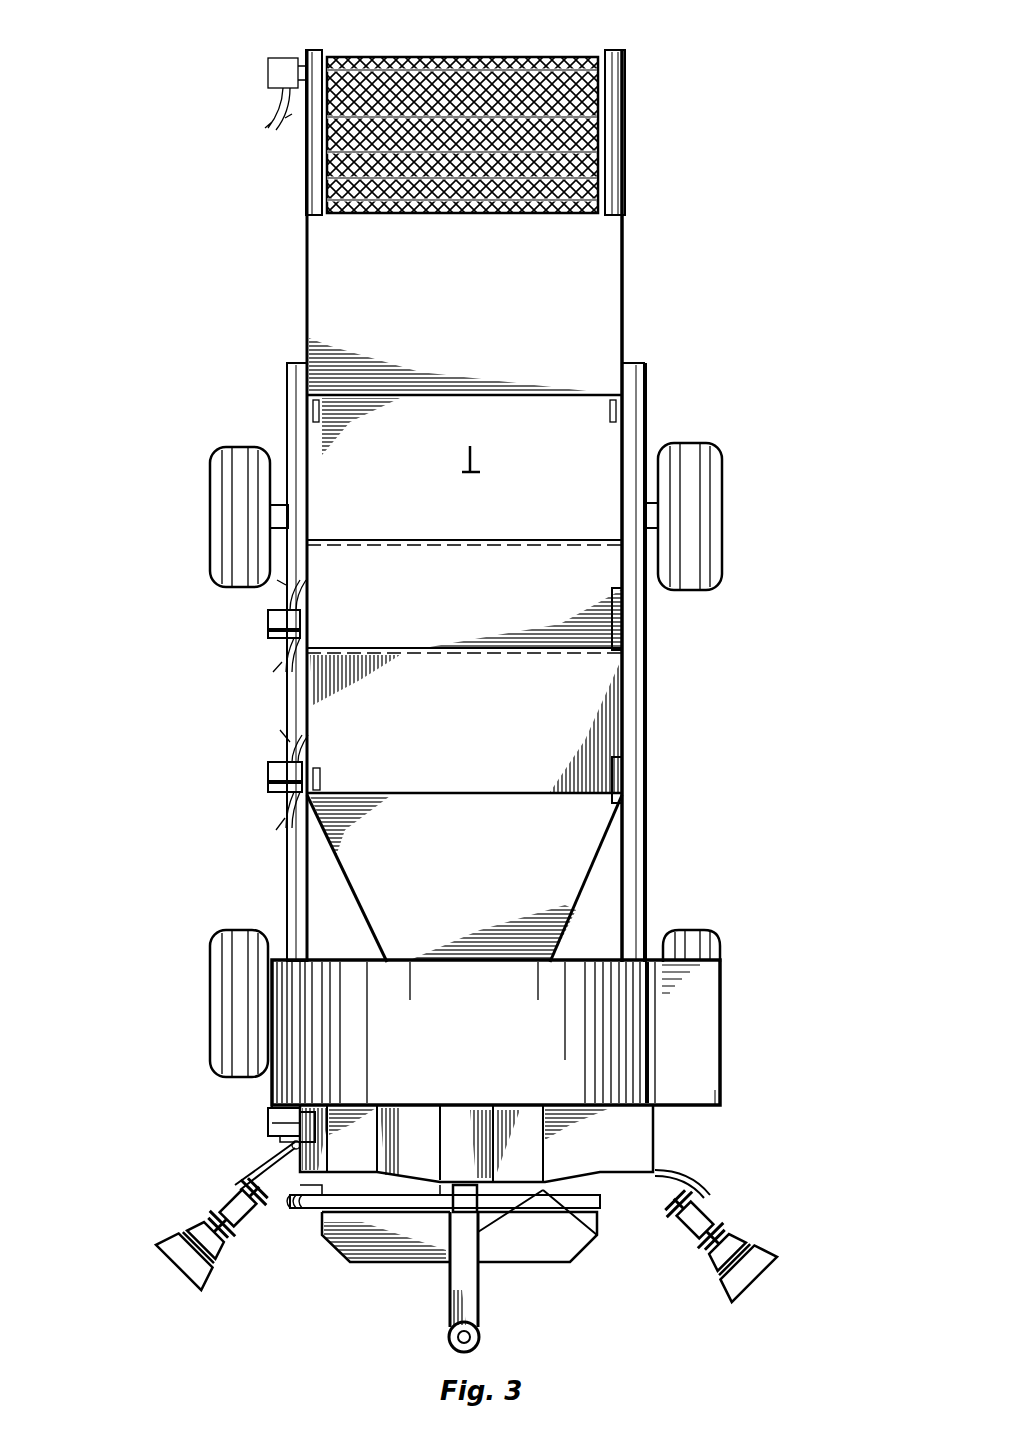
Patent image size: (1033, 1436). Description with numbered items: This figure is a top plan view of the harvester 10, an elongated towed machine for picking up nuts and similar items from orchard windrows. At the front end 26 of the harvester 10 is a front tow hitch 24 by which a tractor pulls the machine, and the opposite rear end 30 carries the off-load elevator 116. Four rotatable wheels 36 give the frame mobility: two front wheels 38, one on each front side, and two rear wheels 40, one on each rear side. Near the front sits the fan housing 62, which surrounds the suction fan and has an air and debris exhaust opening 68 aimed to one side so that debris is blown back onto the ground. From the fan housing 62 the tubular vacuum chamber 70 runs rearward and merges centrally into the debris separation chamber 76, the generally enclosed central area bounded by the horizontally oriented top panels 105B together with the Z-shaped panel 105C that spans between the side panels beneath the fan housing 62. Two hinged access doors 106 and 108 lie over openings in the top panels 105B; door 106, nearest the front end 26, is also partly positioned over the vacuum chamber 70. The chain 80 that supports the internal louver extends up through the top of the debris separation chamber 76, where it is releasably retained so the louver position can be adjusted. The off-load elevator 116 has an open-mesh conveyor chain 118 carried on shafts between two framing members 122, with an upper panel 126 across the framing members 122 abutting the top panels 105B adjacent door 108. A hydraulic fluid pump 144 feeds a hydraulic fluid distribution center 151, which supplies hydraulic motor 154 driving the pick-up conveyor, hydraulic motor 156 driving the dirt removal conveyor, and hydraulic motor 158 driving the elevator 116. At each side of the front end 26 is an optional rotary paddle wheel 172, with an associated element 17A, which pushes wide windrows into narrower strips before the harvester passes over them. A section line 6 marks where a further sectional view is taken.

The section line 6- 6 is at (393, 1358).
The harvester 10 is at (280, 322).
The front tow hitch 24 is at (480, 1300).
The front end 26 is at (335, 1258).
The rear end 30 is at (640, 83).
The rotatable wheels 36 is at (216, 460).
The front wheels 38 is at (215, 935).
The rear wheels 40 is at (240, 447).
The fan housing 62 is at (272, 1087).
The air and debris exhaust opening 68 is at (690, 1043).
The vacuum chamber 70 is at (628, 795).
The debris separation chamber 76 is at (625, 612).
The chain 80 is at (476, 462).
The top panels 105B is at (500, 598).
The Z-shaped panel 105C is at (335, 890).
The access door 106 is at (575, 712).
The access door 108 is at (575, 435).
The off-load elevator 116 is at (325, 150).
The conveyor chain 118 is at (596, 185).
The framing members 122 is at (310, 200).
The upper panel 126 is at (325, 263).
The hydraulic fluid pump 144 is at (475, 1205).
The hydraulic fluid distribution center 151 is at (268, 1118).
The hydraulic motor 154 is at (268, 776).
The hydraulic motor 156 is at (268, 621).
The hydraulic motor 158 is at (268, 74).
The spray nozzle arm 17A is at (228, 1222).
The rotary paddle wheels 172 is at (195, 1248).